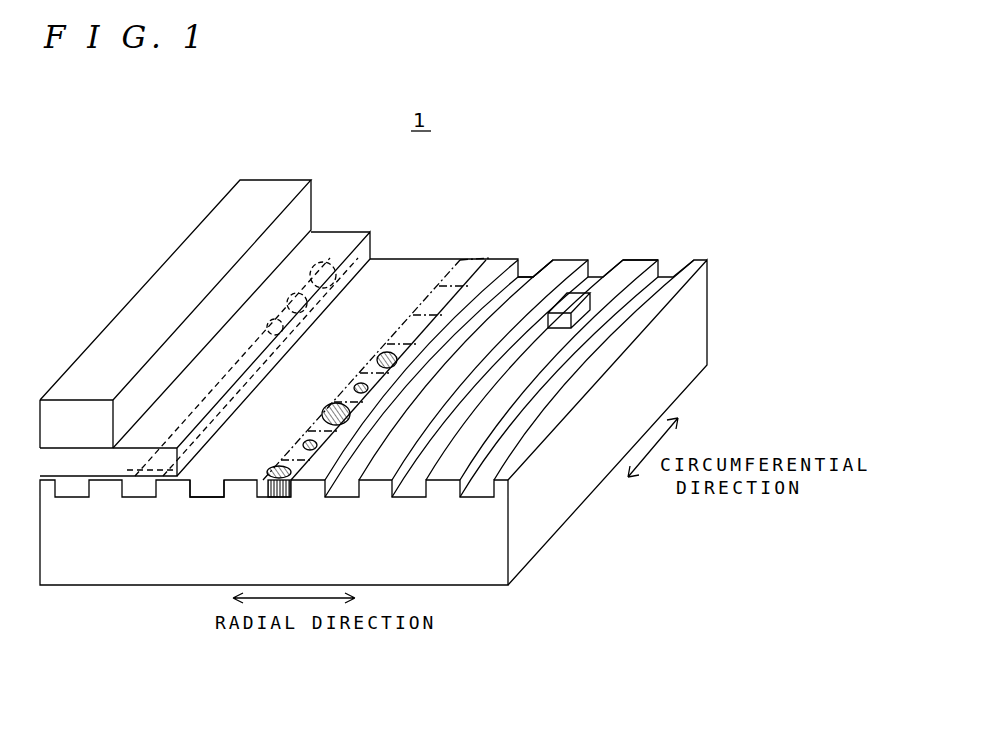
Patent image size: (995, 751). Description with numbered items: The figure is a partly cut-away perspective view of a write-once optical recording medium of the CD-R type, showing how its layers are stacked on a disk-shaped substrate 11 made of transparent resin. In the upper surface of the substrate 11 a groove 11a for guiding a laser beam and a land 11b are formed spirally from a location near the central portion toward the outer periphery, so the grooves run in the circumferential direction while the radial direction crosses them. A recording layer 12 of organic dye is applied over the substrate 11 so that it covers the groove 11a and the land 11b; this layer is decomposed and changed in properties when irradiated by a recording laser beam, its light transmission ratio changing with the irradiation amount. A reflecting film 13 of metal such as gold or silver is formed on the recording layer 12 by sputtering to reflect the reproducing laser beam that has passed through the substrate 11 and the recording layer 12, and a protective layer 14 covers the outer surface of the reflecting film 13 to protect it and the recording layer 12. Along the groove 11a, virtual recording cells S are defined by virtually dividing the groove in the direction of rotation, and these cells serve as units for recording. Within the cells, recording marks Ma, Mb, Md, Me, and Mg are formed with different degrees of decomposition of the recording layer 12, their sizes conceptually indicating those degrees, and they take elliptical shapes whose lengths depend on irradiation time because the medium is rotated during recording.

The substrate 11 is at (592, 467).
The groove 11a is at (534, 271).
The land 11b is at (641, 272).
The recording layer 12 is at (200, 493).
The reflecting film 13 is at (373, 244).
The protective layer 14 is at (311, 202).
The virtual recording cell S is at (490, 259).
The recording mark Ma is at (310, 437).
The recording mark Mb is at (359, 382).
The recording mark Md is at (387, 351).
The recording mark Me is at (278, 462).
The recording mark Mg is at (336, 402).